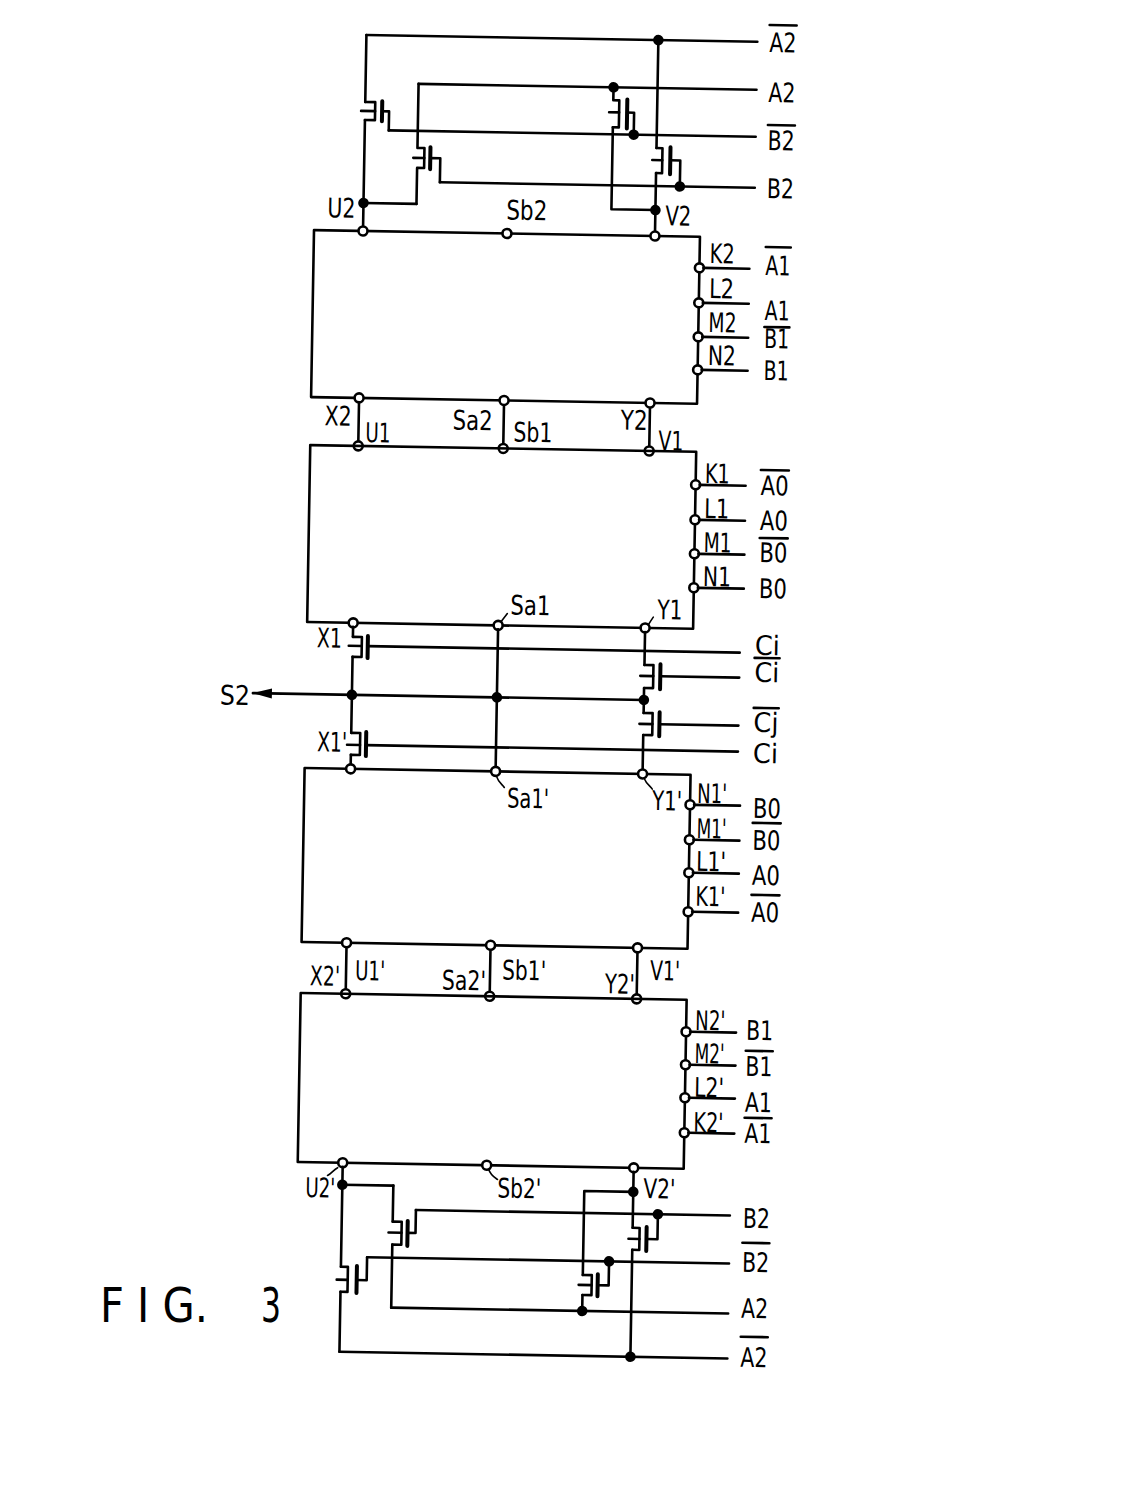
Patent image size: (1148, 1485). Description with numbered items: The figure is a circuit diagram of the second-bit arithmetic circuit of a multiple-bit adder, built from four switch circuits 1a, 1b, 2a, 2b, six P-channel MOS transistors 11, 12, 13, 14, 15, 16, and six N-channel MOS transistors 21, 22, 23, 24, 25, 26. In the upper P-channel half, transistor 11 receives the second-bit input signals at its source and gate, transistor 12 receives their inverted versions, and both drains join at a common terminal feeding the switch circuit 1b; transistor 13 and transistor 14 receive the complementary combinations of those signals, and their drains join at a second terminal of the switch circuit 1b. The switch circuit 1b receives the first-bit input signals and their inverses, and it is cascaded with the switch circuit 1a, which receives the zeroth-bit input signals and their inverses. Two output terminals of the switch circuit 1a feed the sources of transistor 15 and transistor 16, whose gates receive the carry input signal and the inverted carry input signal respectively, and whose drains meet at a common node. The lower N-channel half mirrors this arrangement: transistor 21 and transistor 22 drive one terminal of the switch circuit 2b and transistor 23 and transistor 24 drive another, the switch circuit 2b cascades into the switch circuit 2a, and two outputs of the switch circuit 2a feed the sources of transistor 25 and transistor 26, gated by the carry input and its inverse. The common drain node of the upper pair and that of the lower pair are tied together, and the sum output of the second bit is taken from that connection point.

The switch circuit 1a is at (314, 535).
The switch circuit 1b is at (314, 331).
The switch circuit 2a is at (314, 858).
The switch circuit 2b is at (313, 1084).
The P-channel MOS transistor 11 is at (425, 174).
The P-channel MOS transistor 12 is at (377, 127).
The P-channel MOS transistor 13 is at (624, 95).
The P-channel MOS transistor 14 is at (660, 161).
The P-channel MOS transistor 15 is at (373, 653).
The P-channel MOS transistor 16 is at (648, 673).
The N-channel MOS transistor 21 is at (419, 1217).
The N-channel MOS transistor 22 is at (375, 1295).
The N-channel MOS transistor 23 is at (603, 1285).
The N-channel MOS transistor 24 is at (659, 1234).
The N-channel MOS transistor 25 is at (385, 718).
The N-channel MOS transistor 26 is at (647, 725).